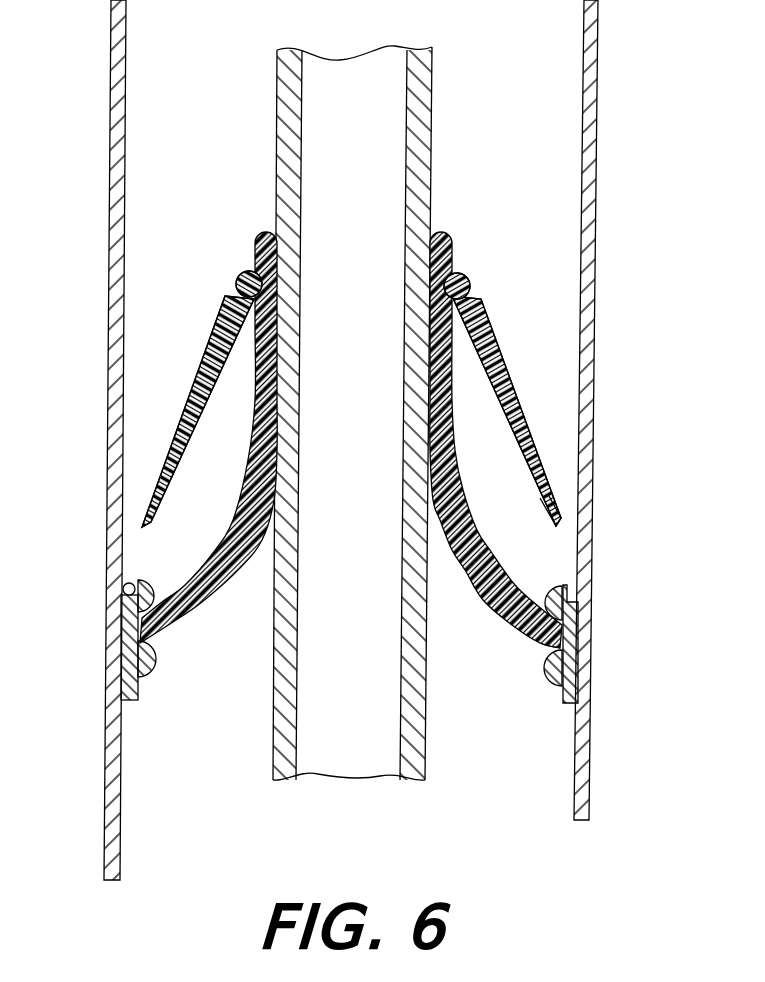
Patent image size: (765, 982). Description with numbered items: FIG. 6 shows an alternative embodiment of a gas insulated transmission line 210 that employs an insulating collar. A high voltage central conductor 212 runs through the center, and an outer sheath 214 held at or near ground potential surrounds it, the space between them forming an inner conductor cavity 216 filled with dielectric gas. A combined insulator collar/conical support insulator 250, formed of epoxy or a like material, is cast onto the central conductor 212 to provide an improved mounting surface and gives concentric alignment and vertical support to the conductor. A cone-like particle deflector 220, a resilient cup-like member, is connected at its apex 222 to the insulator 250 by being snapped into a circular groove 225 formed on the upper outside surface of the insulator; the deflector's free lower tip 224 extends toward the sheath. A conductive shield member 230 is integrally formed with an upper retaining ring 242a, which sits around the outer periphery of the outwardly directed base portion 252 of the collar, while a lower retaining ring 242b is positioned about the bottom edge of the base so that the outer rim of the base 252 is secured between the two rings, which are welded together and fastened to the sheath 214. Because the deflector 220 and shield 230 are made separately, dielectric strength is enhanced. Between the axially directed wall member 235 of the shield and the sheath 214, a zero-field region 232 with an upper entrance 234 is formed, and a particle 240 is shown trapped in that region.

The line 210 is at (165, 440).
The central conductor 212 is at (371, 138).
The outer sheath 214 is at (125, 118).
The inner conductor cavity 216 is at (157, 165).
The cone-like particle deflector 220 is at (491, 334).
The apex 222 is at (464, 279).
The finger tip 224 is at (557, 521).
The circular groove 225 is at (445, 291).
The conductive shield member 230 is at (166, 579).
The zero-field region 232 is at (609, 636).
The upper entrance 234 is at (128, 580).
The axially directed wall member 235 is at (141, 582).
The particle 240 is at (123, 587).
The upper retaining ring 242a is at (552, 589).
The lower retaining ring 242b is at (553, 688).
The combined insulator collar/conical support insulator 250 is at (515, 626).
The base portion 252 is at (548, 650).